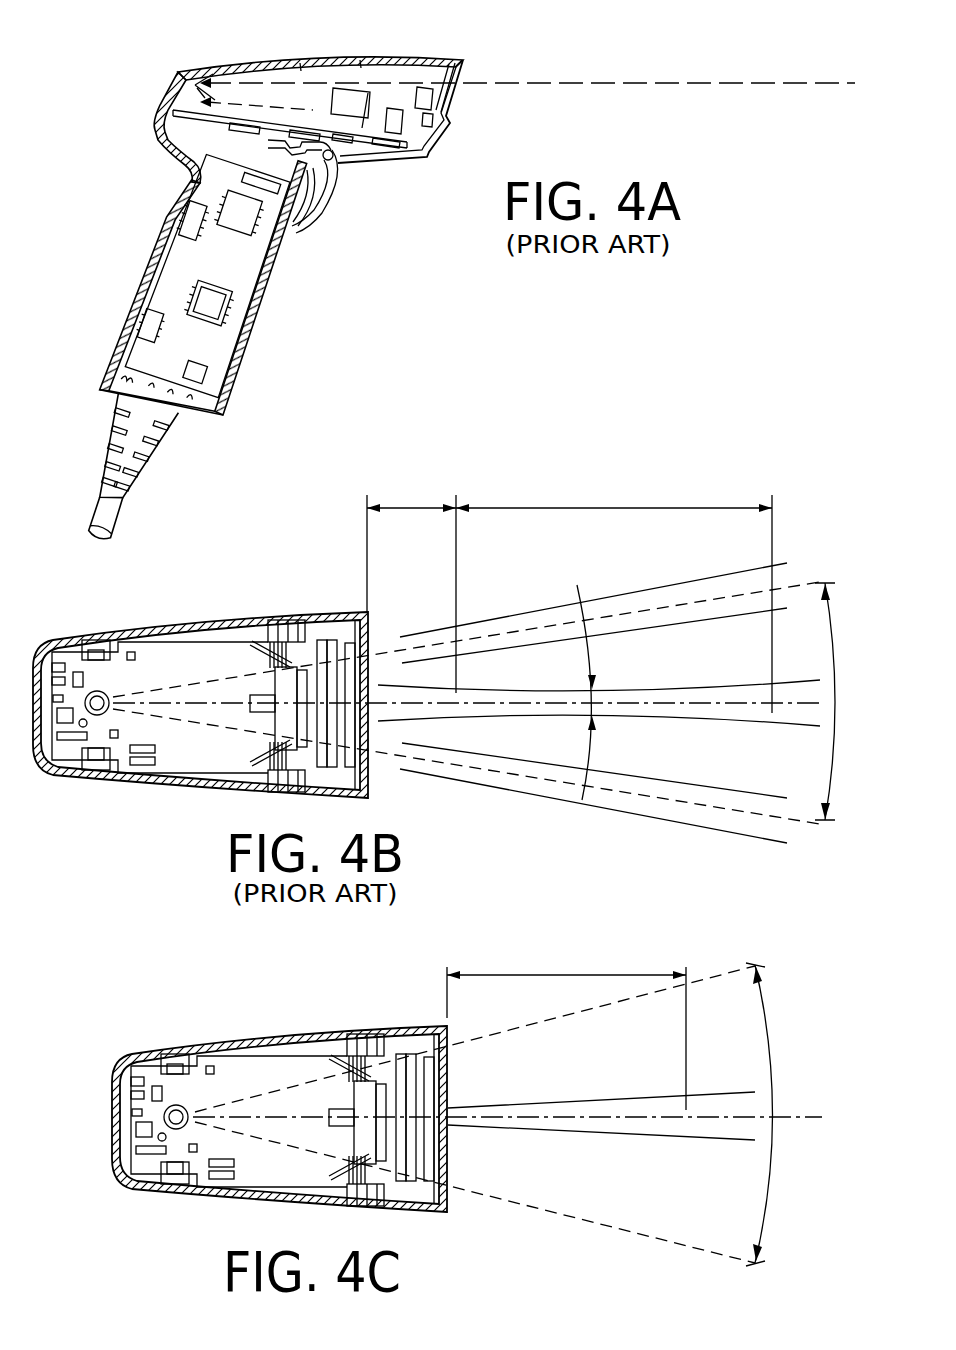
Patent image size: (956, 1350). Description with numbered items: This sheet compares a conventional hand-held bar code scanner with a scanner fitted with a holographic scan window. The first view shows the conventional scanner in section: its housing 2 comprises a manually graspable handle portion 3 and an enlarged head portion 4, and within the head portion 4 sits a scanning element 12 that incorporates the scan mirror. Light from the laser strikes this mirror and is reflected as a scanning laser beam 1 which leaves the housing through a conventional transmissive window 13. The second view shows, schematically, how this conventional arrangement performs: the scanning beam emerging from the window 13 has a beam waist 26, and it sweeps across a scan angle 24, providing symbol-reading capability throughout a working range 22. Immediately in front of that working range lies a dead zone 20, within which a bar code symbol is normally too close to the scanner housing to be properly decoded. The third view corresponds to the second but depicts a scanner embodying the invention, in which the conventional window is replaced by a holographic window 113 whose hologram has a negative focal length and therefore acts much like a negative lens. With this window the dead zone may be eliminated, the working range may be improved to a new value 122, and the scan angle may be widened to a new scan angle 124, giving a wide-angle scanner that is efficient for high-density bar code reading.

In FIG. 4A, the scanning laser beam 1 is at (650, 84).
In FIG. 4B, the scanning laser beam 1 is at (637, 710).
In FIG. 4C, the scanning laser beam 1 is at (553, 1107).
In FIG. 4A, the housing 2 is at (140, 225).
In FIG. 4A, the handle portion 3 is at (257, 317).
In FIG. 4A, the head portion 4 is at (338, 57).
In FIG. 4B, the head portion 4 is at (190, 792).
In FIG. 4A, the scanning element 12 is at (207, 84).
In FIG. 4A, the window 13 is at (465, 76).
In FIG. 4B, the window 13 is at (367, 630).
In FIG. 4B, the dead zone 20 is at (413, 507).
In FIG. 4B, the working range 22 is at (605, 510).
In FIG. 4B, the scan angle 24 is at (837, 670).
In FIG. 4B, the beam waist 26 is at (590, 647).
In FIG. 4C, the holographic window 113 is at (445, 1155).
In FIG. 4C, the new working range 122 is at (563, 975).
In FIG. 4C, the new scan angle 124 is at (776, 1077).